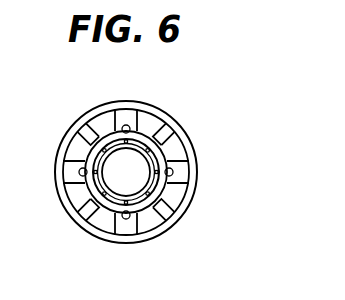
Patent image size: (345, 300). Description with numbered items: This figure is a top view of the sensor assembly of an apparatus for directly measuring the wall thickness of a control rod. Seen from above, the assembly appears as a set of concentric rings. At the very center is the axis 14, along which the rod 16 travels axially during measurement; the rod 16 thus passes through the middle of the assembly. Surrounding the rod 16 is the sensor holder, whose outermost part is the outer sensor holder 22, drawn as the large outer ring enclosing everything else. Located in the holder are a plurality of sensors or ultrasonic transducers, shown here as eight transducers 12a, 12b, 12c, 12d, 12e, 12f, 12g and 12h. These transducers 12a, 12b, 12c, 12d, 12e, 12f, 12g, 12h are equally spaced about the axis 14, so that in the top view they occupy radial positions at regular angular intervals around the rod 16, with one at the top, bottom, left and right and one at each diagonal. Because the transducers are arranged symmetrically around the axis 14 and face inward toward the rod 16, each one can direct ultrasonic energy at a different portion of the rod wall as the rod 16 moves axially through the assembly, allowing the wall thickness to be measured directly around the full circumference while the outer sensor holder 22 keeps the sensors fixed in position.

The ultrasonic transducer 12a is at (128, 234).
The ultrasonic transducer 12b is at (172, 213).
The ultrasonic transducer 12c is at (182, 175).
The ultrasonic transducer 12d is at (150, 134).
The ultrasonic transducer 12e is at (130, 115).
The ultrasonic transducer 12f is at (82, 128).
The ultrasonic transducer 12g is at (65, 175).
The ultrasonic transducer 12h is at (78, 212).
The axis 14 is at (137, 165).
The rod 16 is at (160, 188).
The outer sensor holder 22 is at (60, 147).